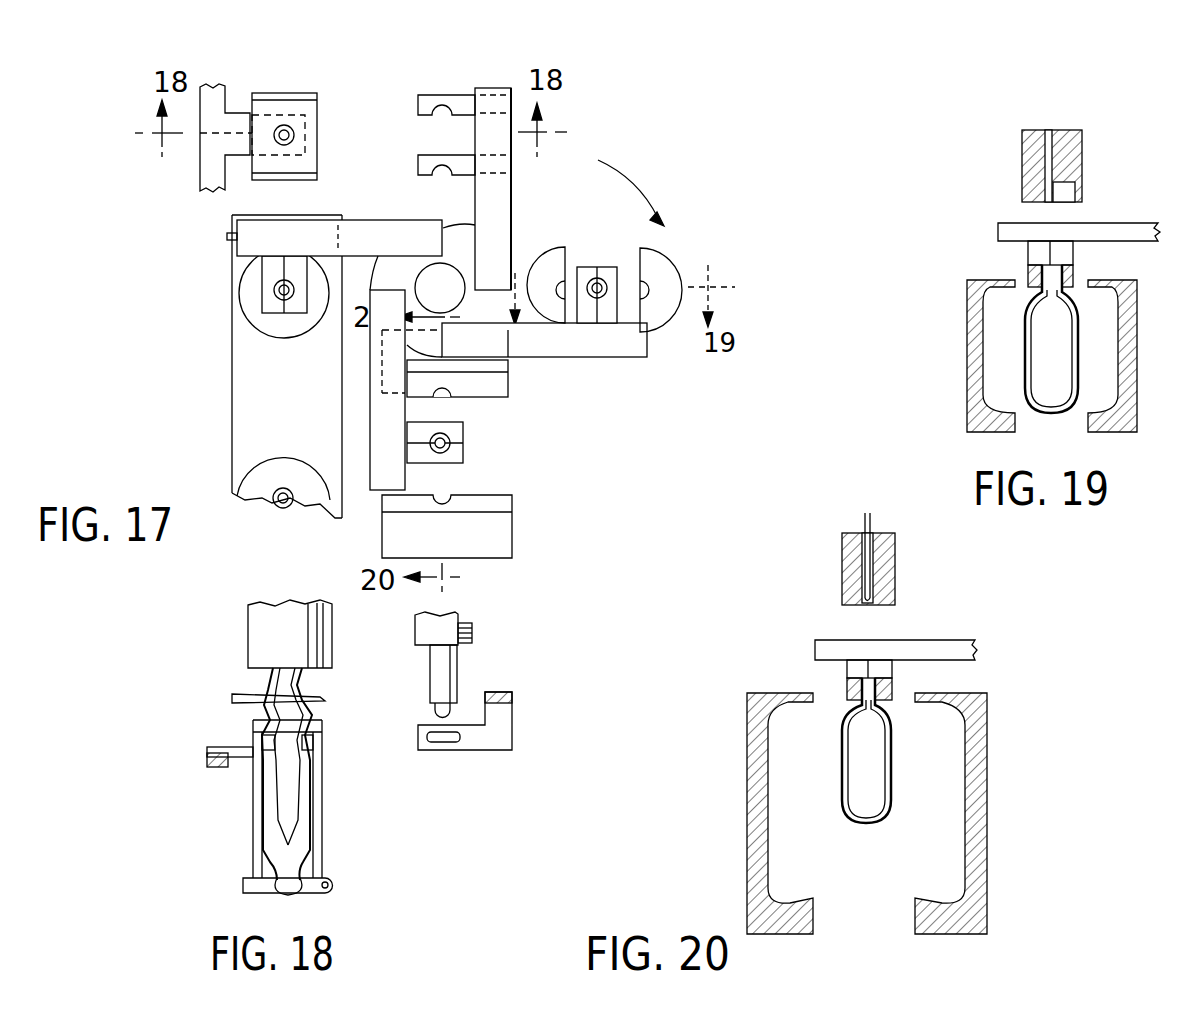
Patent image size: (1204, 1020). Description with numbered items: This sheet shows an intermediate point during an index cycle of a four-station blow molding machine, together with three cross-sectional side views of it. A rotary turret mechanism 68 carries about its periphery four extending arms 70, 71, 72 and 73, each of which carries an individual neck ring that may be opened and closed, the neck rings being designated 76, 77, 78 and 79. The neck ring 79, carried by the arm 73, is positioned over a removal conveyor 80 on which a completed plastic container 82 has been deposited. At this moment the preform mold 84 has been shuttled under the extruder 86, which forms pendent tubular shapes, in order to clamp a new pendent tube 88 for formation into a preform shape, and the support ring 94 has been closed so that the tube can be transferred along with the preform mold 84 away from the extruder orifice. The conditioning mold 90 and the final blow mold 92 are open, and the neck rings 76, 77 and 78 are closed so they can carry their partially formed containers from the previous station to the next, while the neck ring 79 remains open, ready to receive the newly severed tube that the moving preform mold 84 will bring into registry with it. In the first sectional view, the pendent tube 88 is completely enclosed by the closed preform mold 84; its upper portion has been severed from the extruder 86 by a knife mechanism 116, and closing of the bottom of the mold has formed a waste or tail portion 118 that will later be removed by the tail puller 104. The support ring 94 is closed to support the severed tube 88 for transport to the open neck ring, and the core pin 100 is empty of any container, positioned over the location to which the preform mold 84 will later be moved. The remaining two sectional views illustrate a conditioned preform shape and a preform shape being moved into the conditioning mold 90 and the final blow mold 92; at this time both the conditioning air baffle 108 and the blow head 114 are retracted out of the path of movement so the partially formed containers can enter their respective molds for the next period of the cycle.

In FIG. 17, the rotary turret mechanism 68 is at (453, 235).
In FIG. 17, the extending arm 70 is at (593, 357).
In FIG. 19, the extending arm 70 is at (1095, 222).
In FIG. 17, the extending arm 71 is at (370, 472).
In FIG. 20, the extending arm 71 is at (975, 657).
In FIG. 17, the extending arm 72 is at (388, 220).
In FIG. 17, the extending arm 73 is at (512, 192).
In FIG. 17, the neck ring 76 is at (608, 270).
In FIG. 19, the neck ring 76 is at (1073, 272).
In FIG. 17, the neck ring 77 is at (463, 457).
In FIG. 20, the neck ring 77 is at (847, 690).
In FIG. 17, the neck ring 78 is at (262, 293).
In FIG. 17, the neck ring 79 is at (430, 95).
In FIG. 18, the neck ring 79 is at (463, 750).
In FIG. 17, the removal conveyor 80 is at (233, 450).
In FIG. 17, the plastic container 82 is at (293, 455).
In FIG. 17, the preform mold 84 is at (318, 112).
In FIG. 18, the preform mold 84 is at (323, 837).
In FIG. 18, the extruder 86 is at (332, 652).
In FIG. 18, the pendent tube 88 is at (302, 798).
In FIG. 17, the conditioning mold 90 is at (672, 260).
In FIG. 19, the conditioning mold 90 is at (968, 362).
In FIG. 17, the final blow mold 92 is at (512, 533).
In FIG. 20, the final blow mold 92 is at (987, 878).
In FIG. 17, the support ring 94 is at (227, 97).
In FIG. 18, the support ring 94 is at (313, 742).
In FIG. 18, the core pin 100 is at (458, 670).
In FIG. 18, the tail puller 104 is at (245, 883).
In FIG. 19, the conditioning air baffle 108 is at (1082, 145).
In FIG. 20, the blow head 114 is at (895, 582).
In FIG. 18, the knife mechanism 116 is at (235, 702).
In FIG. 18, the tail portion 118 is at (300, 897).